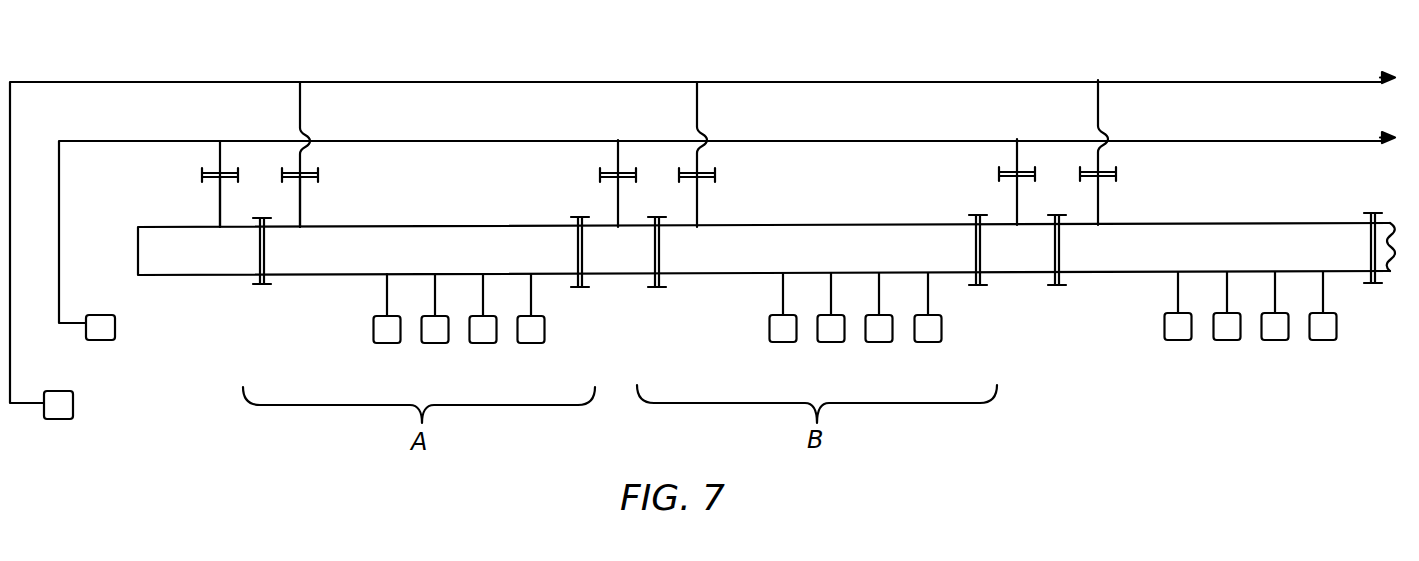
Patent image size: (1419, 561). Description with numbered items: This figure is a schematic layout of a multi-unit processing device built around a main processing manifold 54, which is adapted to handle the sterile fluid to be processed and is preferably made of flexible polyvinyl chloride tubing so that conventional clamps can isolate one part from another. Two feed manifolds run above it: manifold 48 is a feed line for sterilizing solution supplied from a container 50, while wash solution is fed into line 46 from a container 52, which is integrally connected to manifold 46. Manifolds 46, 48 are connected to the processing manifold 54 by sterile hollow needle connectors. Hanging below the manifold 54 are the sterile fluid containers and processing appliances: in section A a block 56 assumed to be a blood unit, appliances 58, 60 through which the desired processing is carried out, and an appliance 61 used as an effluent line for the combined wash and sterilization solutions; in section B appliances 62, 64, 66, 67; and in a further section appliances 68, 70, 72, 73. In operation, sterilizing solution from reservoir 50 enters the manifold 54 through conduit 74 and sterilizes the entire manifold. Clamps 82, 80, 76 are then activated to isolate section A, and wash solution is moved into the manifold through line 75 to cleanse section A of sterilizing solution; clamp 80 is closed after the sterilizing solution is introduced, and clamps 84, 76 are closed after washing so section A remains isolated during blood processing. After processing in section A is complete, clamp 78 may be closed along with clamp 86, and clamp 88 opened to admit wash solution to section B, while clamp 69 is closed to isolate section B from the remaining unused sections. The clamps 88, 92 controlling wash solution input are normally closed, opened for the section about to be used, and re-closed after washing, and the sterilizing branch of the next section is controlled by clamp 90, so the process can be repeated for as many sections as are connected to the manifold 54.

The wash solution manifold 46 is at (195, 81).
The sterilizing solution manifold 48 is at (405, 140).
The sterilizing solution container 50 is at (102, 336).
The wash solution container 52 is at (62, 411).
The processing manifold 54 is at (786, 262).
The blood unit 56 is at (388, 343).
The processing appliance 58 is at (436, 343).
The processing appliance 60 is at (484, 343).
The effluent line appliance 61 is at (532, 343).
The processing appliance 62 is at (784, 342).
The processing appliance 64 is at (832, 342).
The processing appliance 66 is at (880, 342).
The processing appliance 67 is at (929, 342).
The processing appliance 68 is at (1179, 340).
The processing appliance 70 is at (1228, 340).
The processing appliance 72 is at (1276, 340).
The processing appliance 73 is at (1324, 340).
The clamp 69 is at (983, 256).
The sterilizing solution conduit 74 is at (220, 210).
The wash solution line 75 is at (300, 208).
The clamp 76 is at (584, 256).
The clamp 78 is at (661, 257).
The clamp 80 is at (258, 256).
The clamp 82 is at (212, 172).
The clamp 84 is at (305, 172).
The clamp 86 is at (612, 172).
The clamp 88 is at (703, 172).
The clamp 90 is at (1012, 171).
The clamp 92 is at (1104, 171).